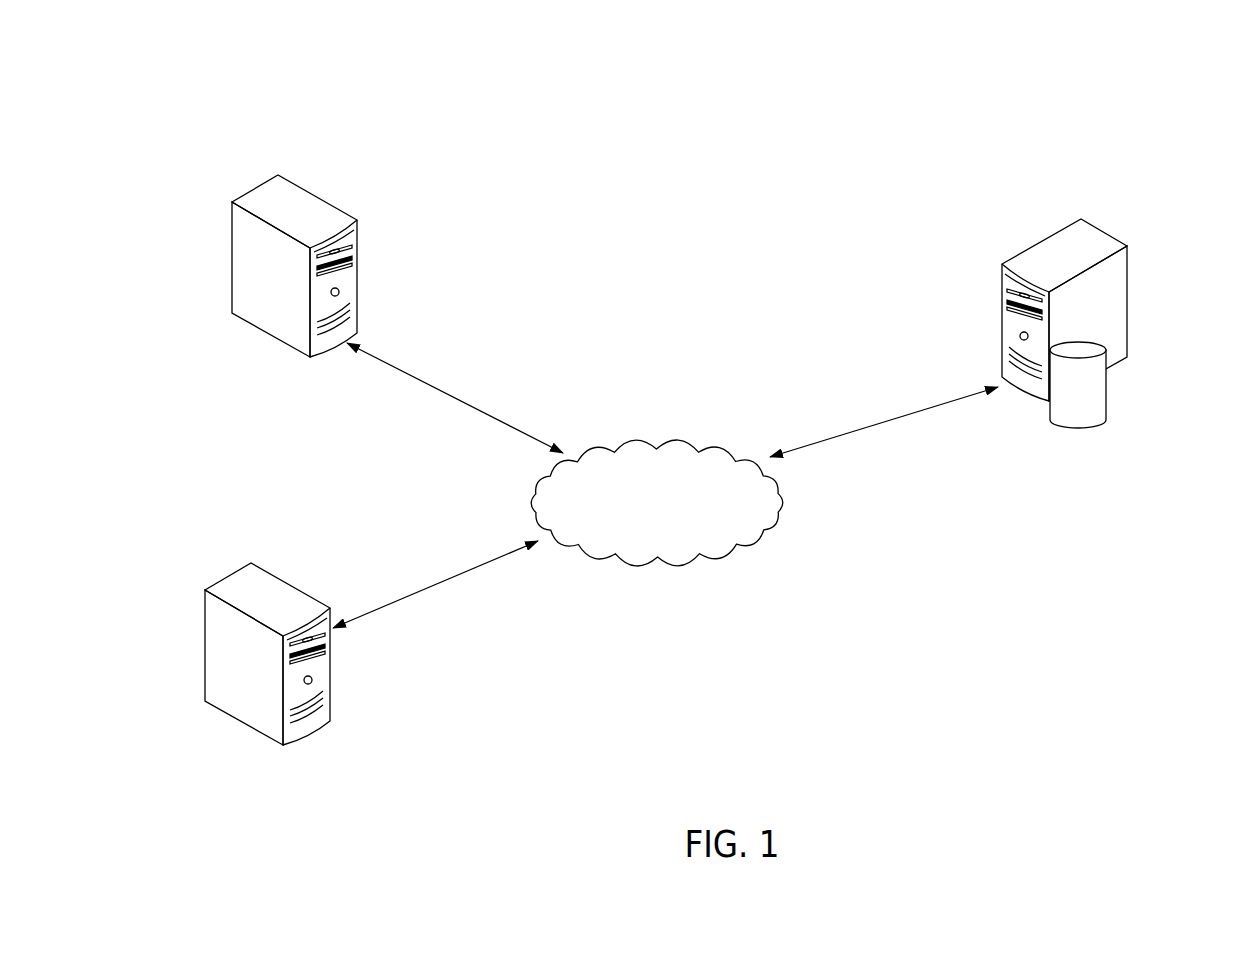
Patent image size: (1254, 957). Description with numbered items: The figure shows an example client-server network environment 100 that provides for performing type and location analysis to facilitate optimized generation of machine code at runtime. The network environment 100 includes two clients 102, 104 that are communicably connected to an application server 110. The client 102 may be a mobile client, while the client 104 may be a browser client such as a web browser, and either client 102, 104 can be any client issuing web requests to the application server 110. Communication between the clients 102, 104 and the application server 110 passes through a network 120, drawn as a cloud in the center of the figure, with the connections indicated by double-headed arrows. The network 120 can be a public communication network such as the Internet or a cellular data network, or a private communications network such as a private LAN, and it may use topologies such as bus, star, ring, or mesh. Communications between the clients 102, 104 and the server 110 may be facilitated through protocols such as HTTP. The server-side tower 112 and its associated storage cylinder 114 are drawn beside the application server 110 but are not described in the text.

The network environment 100 is at (877, 79).
The client 102 is at (278, 175).
The client 104 is at (253, 563).
The application server 110 is at (996, 415).
The server 112 is at (1080, 219).
The database 114 is at (1106, 420).
The network 120 is at (656, 440).